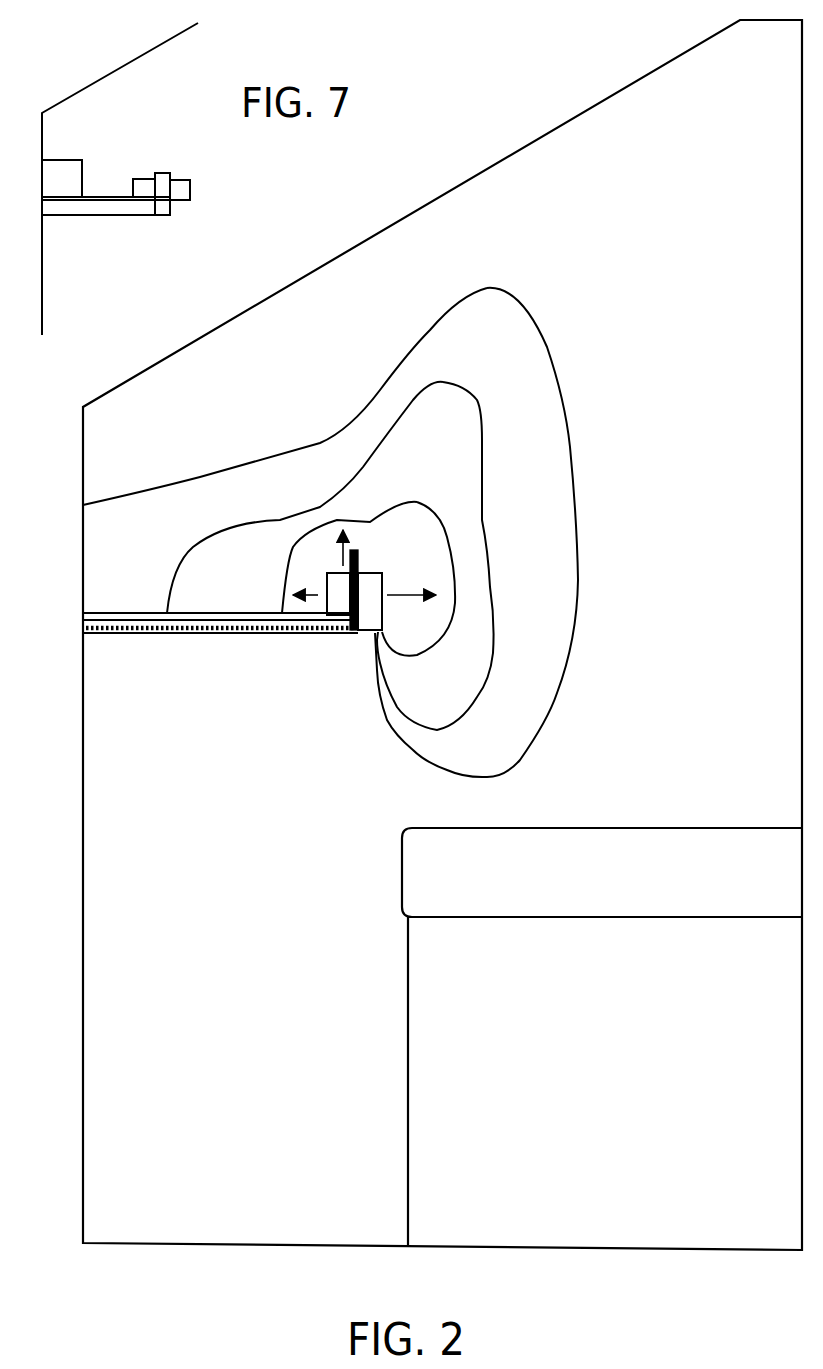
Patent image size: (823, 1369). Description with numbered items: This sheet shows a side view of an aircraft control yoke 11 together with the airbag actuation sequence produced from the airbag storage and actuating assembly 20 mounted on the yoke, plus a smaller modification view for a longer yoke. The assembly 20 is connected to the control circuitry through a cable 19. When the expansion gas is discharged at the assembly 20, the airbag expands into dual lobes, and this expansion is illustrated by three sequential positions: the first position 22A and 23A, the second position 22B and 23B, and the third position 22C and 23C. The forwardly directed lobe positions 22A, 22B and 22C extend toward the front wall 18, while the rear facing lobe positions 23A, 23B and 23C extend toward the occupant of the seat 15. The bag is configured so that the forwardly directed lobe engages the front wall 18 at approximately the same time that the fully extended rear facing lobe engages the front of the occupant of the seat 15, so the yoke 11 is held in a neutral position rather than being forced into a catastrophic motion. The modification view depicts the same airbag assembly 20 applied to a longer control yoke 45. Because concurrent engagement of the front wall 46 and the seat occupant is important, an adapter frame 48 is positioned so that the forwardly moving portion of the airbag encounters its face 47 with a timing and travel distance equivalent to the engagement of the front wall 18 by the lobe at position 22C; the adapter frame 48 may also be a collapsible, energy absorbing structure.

In FIG. 2, the control yoke 11 is at (247, 638).
In FIG. 2, the seat 15 is at (626, 848).
In FIG. 2, the front wall 18 is at (87, 420).
In FIG. 2, the cable 19 is at (148, 636).
In FIG. 7, the airbag storage and actuating assembly 20 is at (183, 200).
In FIG. 2, the airbag storage and actuating assembly 20 is at (373, 620).
In FIG. 2, the forwardly directed lobe, first sequential position 22A is at (288, 587).
In FIG. 2, the forwardly directed lobe, second sequential position 22B is at (193, 545).
In FIG. 2, the forwardly directed lobe, third sequential position 22C is at (203, 477).
In FIG. 2, the rear facing lobe, first sequential position 23A is at (433, 502).
In FIG. 2, the rear facing lobe, second sequential position 23B is at (482, 403).
In FIG. 2, the rear facing lobe, third sequential position 23C is at (576, 488).
In FIG. 7, the control yoke 45 is at (105, 207).
In FIG. 7, the front wall 46 is at (43, 263).
In FIG. 7, the face 47 is at (88, 175).
In FIG. 7, the adapter frame 48 is at (72, 160).